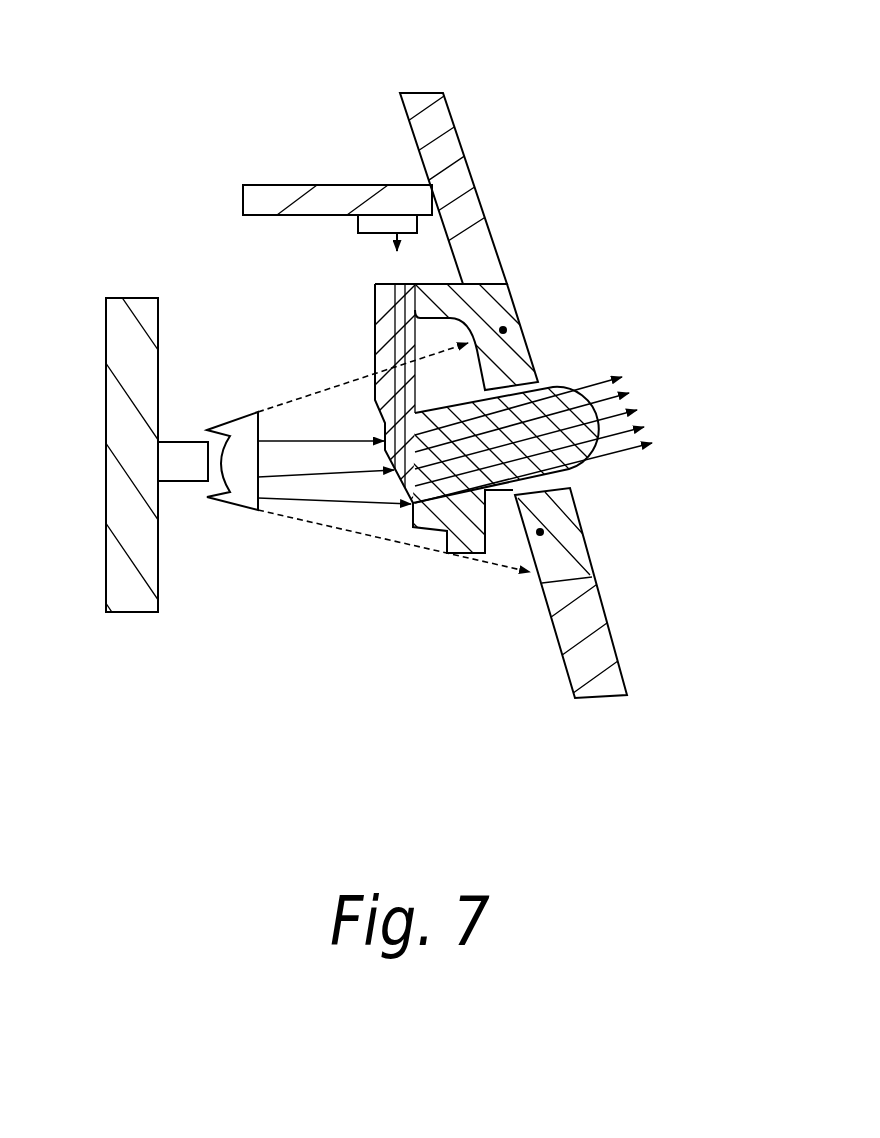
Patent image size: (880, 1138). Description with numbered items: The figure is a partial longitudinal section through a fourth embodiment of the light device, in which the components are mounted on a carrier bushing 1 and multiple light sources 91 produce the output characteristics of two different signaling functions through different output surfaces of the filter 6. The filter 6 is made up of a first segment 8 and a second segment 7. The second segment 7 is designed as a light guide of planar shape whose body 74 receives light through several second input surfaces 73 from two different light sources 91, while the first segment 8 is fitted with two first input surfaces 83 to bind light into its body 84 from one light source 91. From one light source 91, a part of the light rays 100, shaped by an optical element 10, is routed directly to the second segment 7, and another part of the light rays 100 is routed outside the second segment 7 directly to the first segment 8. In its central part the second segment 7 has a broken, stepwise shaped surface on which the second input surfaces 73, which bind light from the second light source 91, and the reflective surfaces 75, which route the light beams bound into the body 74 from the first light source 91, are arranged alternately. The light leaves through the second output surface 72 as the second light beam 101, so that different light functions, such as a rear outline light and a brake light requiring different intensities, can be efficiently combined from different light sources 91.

The carrier bushing 1 is at (104, 463).
The filter 6 is at (440, 76).
The second segment 7 is at (592, 478).
The first segment 8 is at (460, 115).
The optical element 10 is at (233, 512).
The second output surface 72 is at (557, 384).
The second input surface 73 is at (399, 283).
The body 74 is at (578, 478).
The reflective surfaces 75 is at (375, 478).
The first input surface 83 is at (470, 334).
The body 84 is at (503, 330).
The light source 91 is at (373, 222).
The light ray 100 is at (414, 312).
The second light beam 101 is at (675, 368).